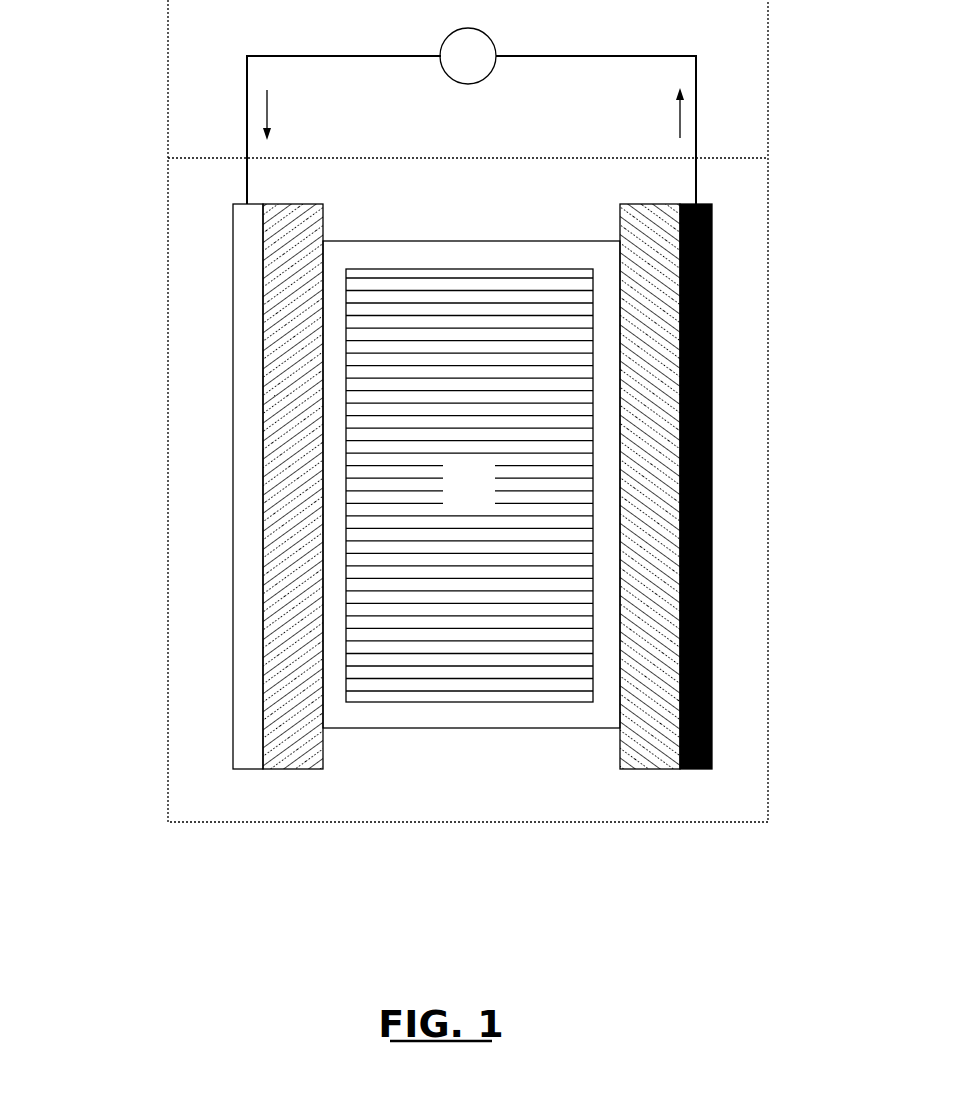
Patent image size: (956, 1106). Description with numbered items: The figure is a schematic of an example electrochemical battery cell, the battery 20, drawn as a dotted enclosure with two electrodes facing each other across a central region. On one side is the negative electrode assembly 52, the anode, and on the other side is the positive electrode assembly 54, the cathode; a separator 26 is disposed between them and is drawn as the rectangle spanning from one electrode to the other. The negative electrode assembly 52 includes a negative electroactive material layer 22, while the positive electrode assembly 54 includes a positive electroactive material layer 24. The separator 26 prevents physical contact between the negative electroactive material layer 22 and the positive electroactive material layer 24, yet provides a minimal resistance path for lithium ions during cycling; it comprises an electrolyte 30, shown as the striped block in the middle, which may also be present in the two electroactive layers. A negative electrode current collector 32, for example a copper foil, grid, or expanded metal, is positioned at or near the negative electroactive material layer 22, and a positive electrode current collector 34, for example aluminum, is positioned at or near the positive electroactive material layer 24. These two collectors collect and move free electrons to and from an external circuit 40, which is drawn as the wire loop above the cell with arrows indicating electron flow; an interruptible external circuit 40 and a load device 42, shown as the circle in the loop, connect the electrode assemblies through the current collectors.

The battery 20 is at (158, 240).
The negative electroactive material layer 22 is at (651, 769).
The positive electroactive material layer 24 is at (290, 769).
The separator 26 is at (472, 728).
The electrolyte 30 is at (469, 485).
The negative electrode current collector 32 is at (712, 485).
The positive electrode current collector 34 is at (232, 487).
The external circuit 40 is at (160, 76).
The load device 42 is at (471, 116).
The negative electrode assembly 52 is at (673, 560).
The positive electrode assembly 54 is at (199, 559).